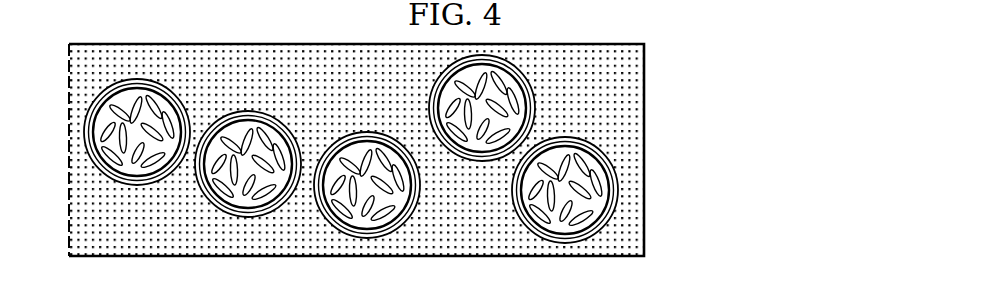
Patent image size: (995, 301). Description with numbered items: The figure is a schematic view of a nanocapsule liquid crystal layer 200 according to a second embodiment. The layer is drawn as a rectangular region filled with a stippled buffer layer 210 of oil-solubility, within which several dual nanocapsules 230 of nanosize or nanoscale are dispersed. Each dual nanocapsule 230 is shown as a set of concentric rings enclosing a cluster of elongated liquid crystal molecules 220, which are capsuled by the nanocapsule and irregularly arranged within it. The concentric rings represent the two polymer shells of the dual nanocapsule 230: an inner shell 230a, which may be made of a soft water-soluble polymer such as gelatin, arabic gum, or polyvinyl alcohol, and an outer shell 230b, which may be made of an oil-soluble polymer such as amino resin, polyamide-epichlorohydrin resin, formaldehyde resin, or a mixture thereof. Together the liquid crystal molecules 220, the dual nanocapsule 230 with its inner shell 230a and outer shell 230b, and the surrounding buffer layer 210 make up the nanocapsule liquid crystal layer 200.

The nanocapsule liquid crystal layer 200 is at (458, 150).
The buffer layer 210 is at (598, 100).
The liquid crystal molecules 220 is at (582, 162).
The dual nanocapsule 230 is at (655, 192).
The inner shell 230a is at (608, 190).
The outer shell 230b is at (611, 208).